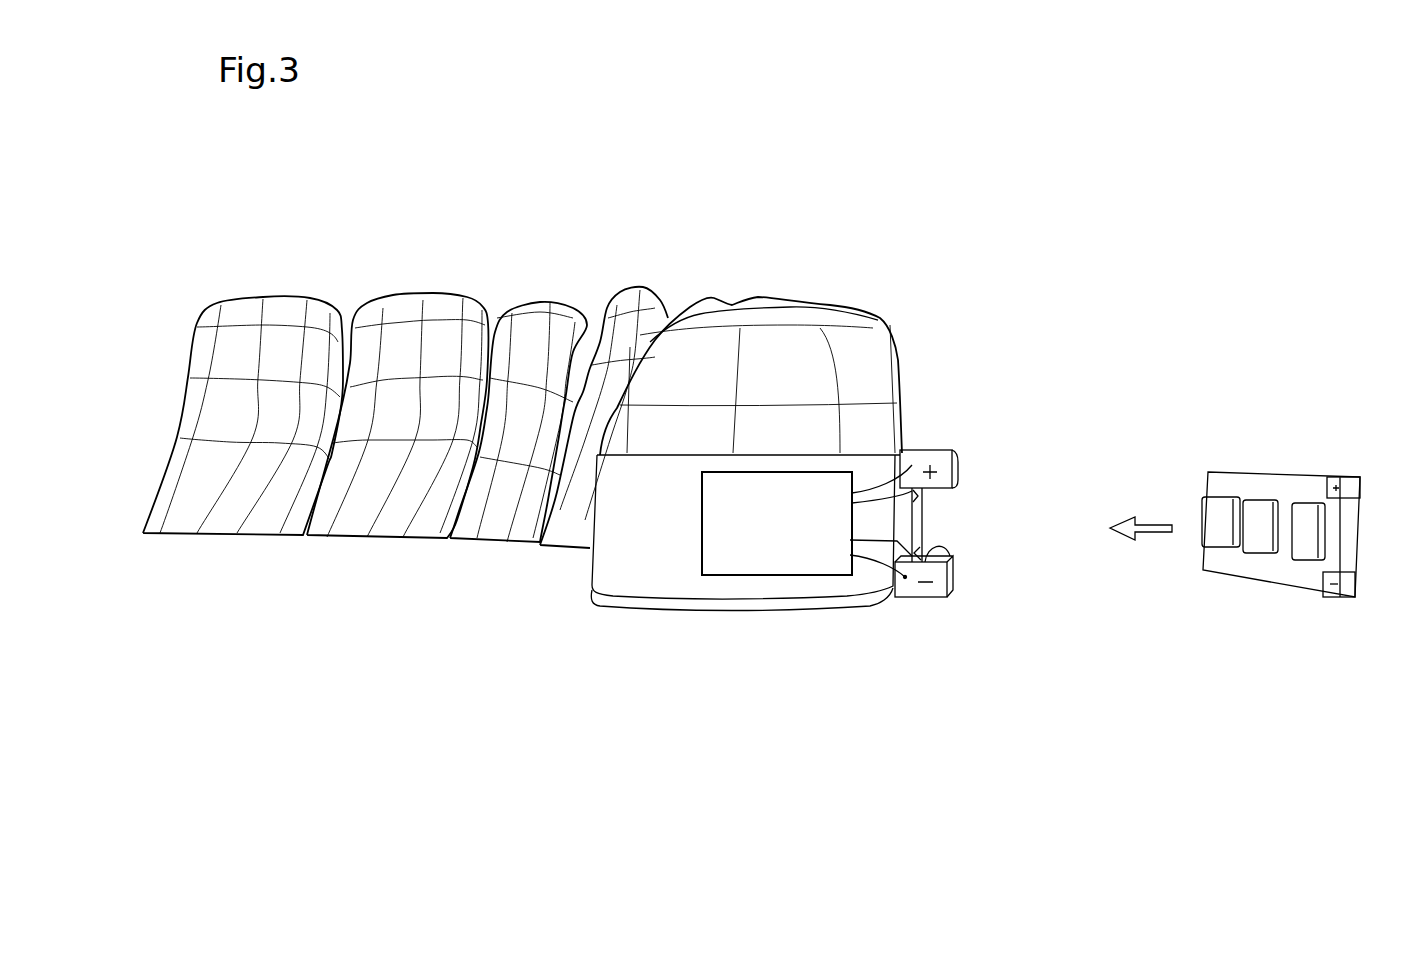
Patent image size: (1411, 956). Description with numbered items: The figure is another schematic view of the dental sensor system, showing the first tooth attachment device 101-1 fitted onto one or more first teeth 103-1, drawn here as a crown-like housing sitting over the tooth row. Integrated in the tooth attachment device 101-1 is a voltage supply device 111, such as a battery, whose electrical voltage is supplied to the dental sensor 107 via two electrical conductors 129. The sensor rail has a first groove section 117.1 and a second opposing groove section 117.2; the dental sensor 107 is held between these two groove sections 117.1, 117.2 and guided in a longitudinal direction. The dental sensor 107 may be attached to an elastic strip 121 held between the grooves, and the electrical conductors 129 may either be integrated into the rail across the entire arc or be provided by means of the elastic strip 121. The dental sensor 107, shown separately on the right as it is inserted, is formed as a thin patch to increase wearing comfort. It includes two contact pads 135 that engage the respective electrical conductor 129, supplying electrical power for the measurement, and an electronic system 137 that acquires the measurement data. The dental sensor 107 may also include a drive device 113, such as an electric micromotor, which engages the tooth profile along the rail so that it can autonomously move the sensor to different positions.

The first teeth 103-1 is at (772, 348).
The first tooth attachment device 101-1 is at (658, 525).
The voltage supply device 111 is at (765, 525).
The elastic strip 121 is at (868, 525).
The second groove section 117.2 is at (928, 449).
The first groove section 117.1 is at (932, 600).
The electrical conductors 129 is at (927, 538).
The dental sensor 107 is at (1288, 572).
The drive device 113 is at (1218, 507).
The electronic system 137 is at (1260, 507).
The contact pads 135 is at (1320, 593).